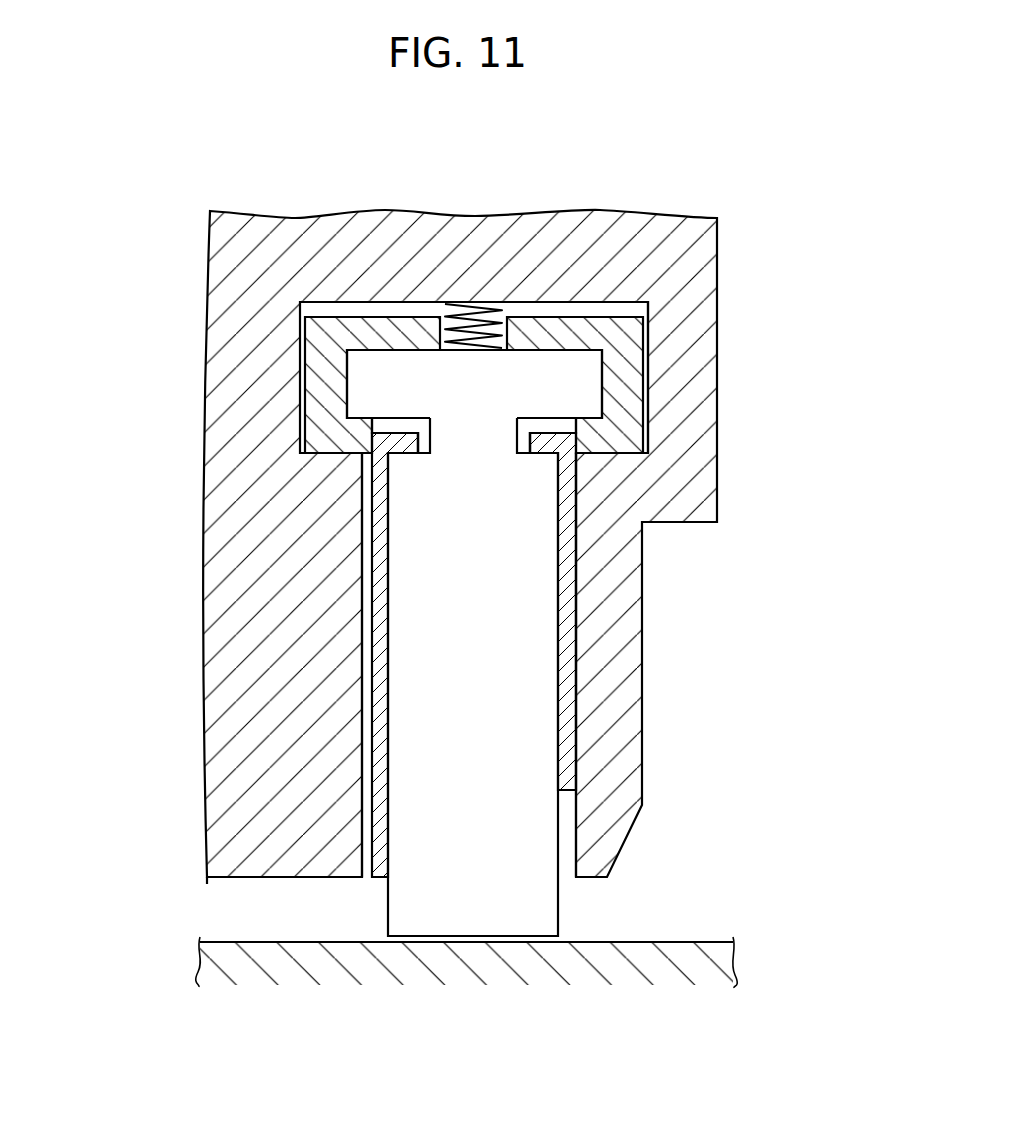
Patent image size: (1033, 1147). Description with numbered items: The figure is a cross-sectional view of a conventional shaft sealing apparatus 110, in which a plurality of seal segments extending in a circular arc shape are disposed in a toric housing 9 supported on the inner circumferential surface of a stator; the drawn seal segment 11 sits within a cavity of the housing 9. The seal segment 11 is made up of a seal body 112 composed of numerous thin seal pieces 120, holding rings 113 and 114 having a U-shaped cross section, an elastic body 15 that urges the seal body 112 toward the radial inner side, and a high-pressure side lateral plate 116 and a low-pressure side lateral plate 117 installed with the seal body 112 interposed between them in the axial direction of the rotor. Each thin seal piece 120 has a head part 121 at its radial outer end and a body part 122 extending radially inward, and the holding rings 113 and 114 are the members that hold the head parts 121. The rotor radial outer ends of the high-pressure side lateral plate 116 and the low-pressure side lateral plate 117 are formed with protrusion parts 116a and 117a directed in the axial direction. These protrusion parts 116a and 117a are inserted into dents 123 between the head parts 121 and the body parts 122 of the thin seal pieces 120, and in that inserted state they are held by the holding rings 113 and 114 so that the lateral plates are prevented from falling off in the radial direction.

The shaft sealing apparatus 110 is at (669, 158).
The housing 9 is at (700, 246).
The seal segment 11 is at (546, 310).
The elastic body 15 is at (469, 312).
The dents 123 is at (414, 422).
The holding ring 113 is at (316, 380).
The holding ring 114 is at (628, 366).
The head part 121 is at (355, 408).
The protrusion part 117a is at (562, 430).
The protrusion part 116a is at (407, 450).
The seal body 112 is at (562, 590).
The high-pressure side lateral plate 116 is at (385, 580).
The low-pressure side lateral plate 117 is at (580, 636).
The body part 122 is at (410, 740).
The thin seal piece 120 is at (415, 643).